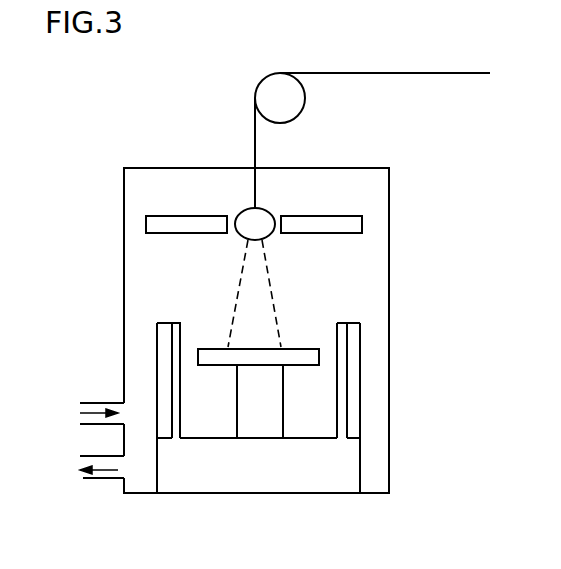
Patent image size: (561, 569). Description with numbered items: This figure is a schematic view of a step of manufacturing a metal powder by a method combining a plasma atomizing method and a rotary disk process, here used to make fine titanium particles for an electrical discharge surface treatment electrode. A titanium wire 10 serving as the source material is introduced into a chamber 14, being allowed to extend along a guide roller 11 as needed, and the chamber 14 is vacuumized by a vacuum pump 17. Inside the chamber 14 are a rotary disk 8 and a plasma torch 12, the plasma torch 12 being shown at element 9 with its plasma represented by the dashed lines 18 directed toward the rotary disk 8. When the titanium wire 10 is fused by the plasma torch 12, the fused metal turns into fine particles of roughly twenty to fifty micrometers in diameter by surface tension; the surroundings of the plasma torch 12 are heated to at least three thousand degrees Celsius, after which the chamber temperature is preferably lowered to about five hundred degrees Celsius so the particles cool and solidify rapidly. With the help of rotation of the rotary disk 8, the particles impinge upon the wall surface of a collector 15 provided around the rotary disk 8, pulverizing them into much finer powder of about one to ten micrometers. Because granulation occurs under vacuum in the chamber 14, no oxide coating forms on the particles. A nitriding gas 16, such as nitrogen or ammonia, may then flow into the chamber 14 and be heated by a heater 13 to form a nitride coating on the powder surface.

The rotary disk 8 is at (228, 348).
The heat source / electrode 9 is at (245, 208).
The titanium wire 10 is at (407, 73).
The guide roller 11 is at (293, 110).
The plasma torch 12 is at (160, 215).
The heater 13 is at (162, 340).
The chamber 14 is at (389, 338).
The collector 15 is at (350, 465).
The nitriding gas 16 is at (94, 410).
The vacuum pump 17 is at (103, 473).
The beam 18 is at (262, 297).